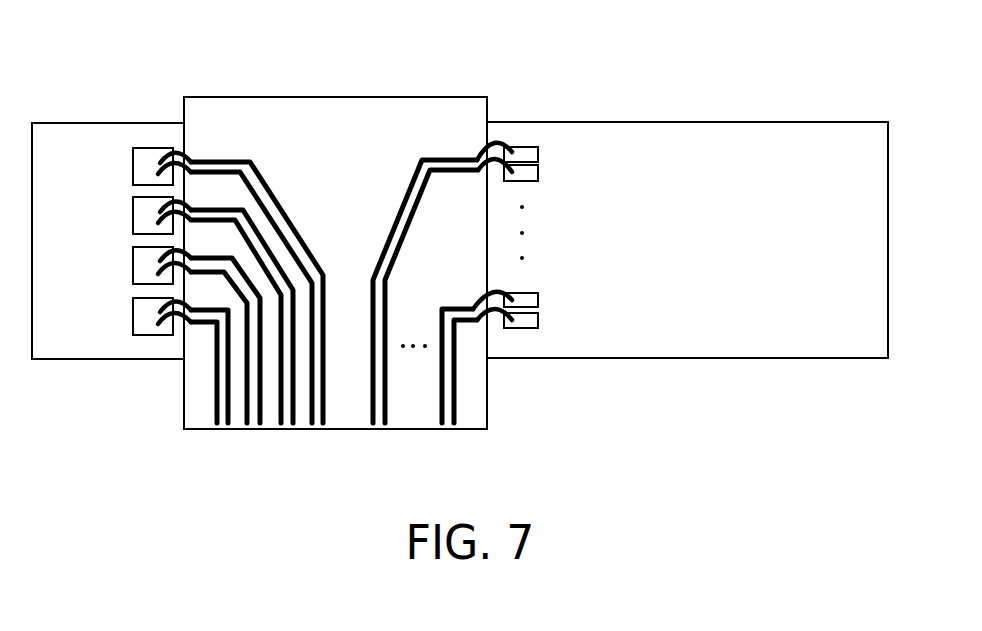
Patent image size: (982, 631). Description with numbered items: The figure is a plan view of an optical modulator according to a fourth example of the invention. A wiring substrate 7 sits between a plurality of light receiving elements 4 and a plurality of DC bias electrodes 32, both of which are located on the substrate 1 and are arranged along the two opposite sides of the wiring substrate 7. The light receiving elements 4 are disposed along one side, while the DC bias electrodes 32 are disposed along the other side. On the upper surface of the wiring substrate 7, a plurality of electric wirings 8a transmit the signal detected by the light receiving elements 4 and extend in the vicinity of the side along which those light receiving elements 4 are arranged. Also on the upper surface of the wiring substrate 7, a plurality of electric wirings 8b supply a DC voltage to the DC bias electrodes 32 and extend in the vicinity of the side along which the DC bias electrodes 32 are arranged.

The substrate 1 is at (806, 128).
The light receiving elements 4 is at (142, 147).
The wiring substrate 7 is at (230, 105).
The electric wirings 8a is at (258, 168).
The electric wirings 8b is at (442, 158).
The DC bias electrodes 32 is at (530, 148).